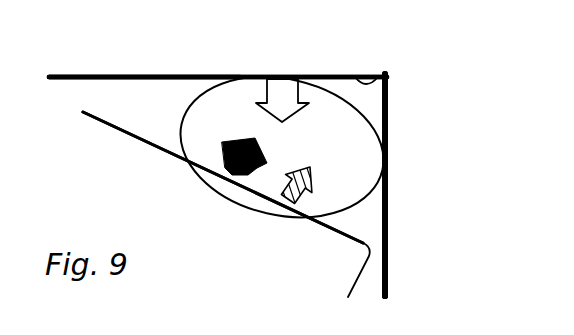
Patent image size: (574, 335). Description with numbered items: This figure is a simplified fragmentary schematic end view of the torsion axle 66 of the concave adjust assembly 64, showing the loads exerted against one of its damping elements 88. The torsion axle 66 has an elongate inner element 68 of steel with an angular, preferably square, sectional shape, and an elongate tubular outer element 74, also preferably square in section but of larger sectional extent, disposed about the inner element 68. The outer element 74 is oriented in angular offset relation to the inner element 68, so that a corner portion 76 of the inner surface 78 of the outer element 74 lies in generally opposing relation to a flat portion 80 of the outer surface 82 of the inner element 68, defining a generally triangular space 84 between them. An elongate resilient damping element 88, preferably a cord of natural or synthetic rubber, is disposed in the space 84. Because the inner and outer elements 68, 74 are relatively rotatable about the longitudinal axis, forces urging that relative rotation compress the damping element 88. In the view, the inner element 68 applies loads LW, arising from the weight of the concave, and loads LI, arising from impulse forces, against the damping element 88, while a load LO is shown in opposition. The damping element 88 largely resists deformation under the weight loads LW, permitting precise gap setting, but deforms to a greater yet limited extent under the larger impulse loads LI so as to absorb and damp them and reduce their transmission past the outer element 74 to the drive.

The concave adjust assembly 64 is at (418, 60).
The torsion axle 66 is at (392, 92).
The inner element 68 is at (350, 231).
The outer element 74 is at (390, 278).
The corner portions 76 is at (356, 77).
The inner surface 78 is at (388, 116).
The flat portions 80 is at (108, 120).
The outer surface 82 is at (223, 134).
The spaces 84 is at (157, 95).
The damping elements 88 is at (238, 78).
The load LO is at (282, 78).
The loads from concave weight LW is at (235, 175).
The impulse loads LI is at (264, 194).